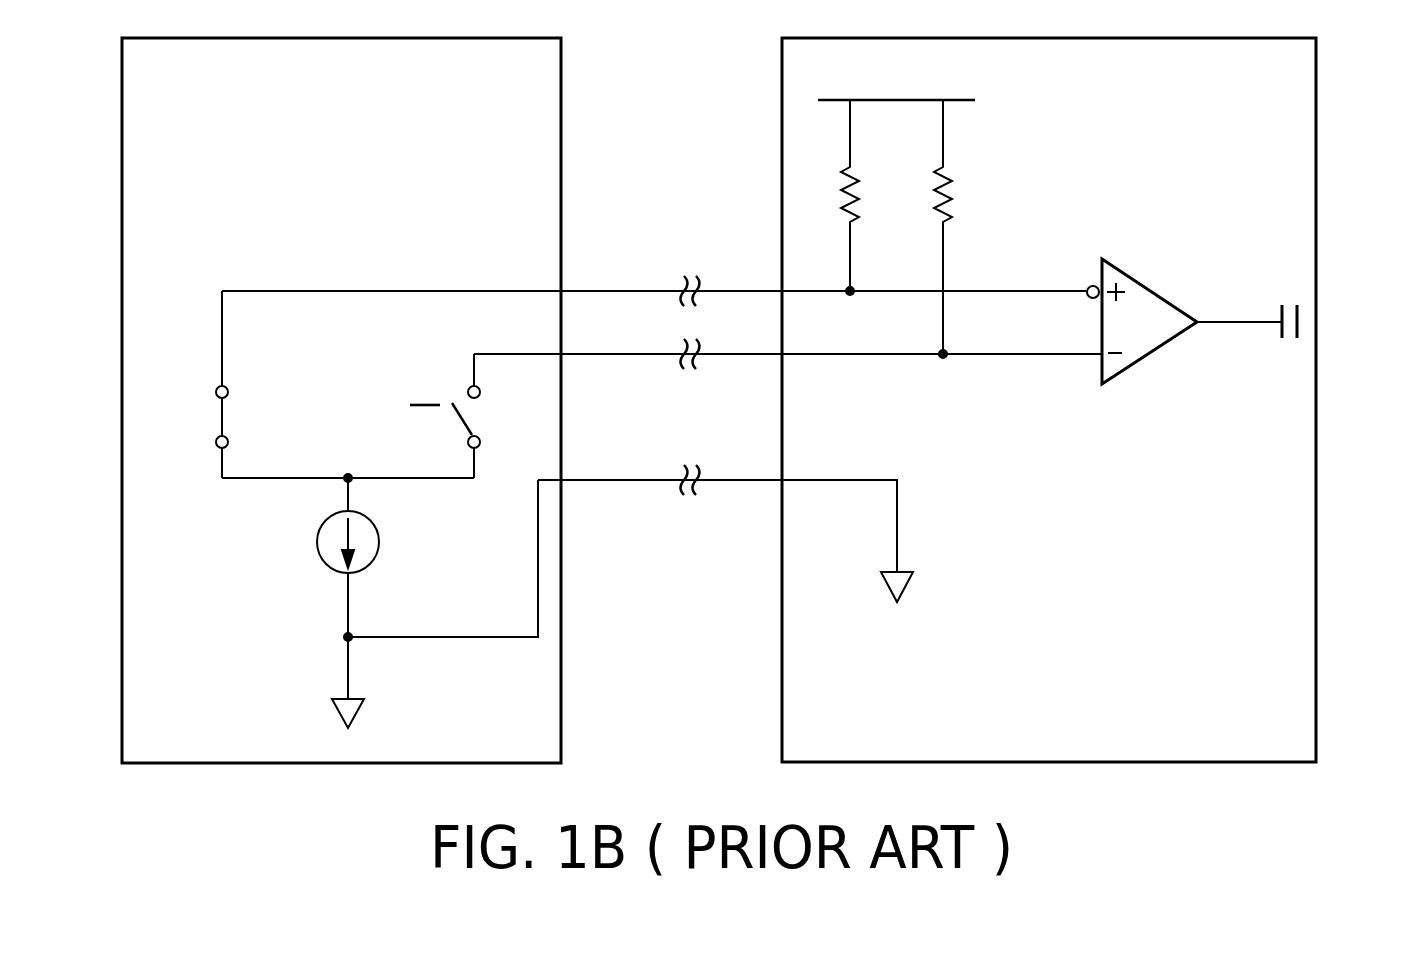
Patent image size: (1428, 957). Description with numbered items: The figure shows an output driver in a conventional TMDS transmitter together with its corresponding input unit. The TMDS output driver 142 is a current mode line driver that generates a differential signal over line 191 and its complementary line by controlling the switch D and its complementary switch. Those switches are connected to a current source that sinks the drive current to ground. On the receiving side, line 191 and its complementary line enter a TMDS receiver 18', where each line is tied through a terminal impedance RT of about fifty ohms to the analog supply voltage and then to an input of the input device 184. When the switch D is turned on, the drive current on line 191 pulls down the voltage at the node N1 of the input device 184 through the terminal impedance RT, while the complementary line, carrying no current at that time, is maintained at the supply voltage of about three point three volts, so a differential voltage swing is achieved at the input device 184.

The TMDS output driver 142 is at (128, 100).
The TMDS receiver 18' is at (1099, 400).
The line 191 is at (628, 289).
The input device 184 is at (1150, 288).